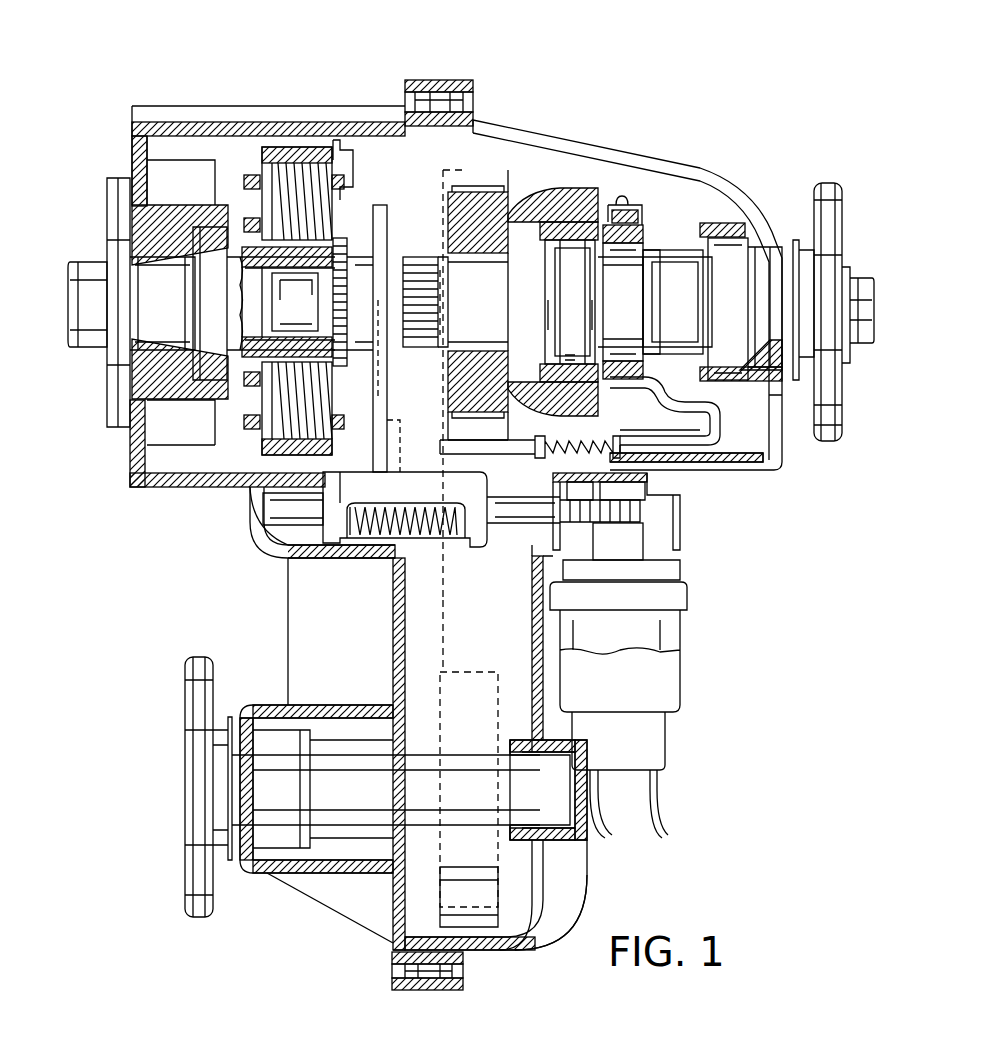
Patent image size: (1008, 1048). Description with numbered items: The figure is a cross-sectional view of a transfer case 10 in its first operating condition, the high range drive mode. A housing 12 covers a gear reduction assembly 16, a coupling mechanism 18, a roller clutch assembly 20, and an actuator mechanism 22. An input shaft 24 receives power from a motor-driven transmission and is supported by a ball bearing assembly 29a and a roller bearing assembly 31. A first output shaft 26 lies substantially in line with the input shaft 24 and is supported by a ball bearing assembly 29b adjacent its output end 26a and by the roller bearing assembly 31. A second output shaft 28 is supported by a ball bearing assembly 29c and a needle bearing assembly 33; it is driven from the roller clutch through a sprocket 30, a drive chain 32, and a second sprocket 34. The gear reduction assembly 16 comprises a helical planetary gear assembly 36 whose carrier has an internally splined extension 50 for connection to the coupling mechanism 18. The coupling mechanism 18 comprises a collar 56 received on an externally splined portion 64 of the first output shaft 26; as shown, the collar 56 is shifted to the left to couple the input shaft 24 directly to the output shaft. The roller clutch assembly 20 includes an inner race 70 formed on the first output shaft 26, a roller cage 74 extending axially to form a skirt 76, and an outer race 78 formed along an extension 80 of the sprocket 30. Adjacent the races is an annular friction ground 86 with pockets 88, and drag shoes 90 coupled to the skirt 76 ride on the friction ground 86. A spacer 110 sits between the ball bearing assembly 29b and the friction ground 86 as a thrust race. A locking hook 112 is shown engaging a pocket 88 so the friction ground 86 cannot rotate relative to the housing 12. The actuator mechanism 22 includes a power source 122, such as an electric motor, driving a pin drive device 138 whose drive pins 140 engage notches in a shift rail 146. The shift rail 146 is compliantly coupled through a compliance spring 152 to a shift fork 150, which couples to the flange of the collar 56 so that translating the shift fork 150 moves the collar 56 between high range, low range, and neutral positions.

The transfer case 10 is at (518, 76).
The housing 12 is at (690, 134).
The gear reduction assembly 16 is at (365, 170).
The coupling mechanism 18 is at (403, 176).
The roller clutch assembly 20 is at (546, 150).
The actuator mechanism 22 is at (708, 522).
The input shaft 24 is at (68, 312).
The first output shaft 26 is at (430, 256).
The output end 26a is at (870, 316).
The second output shaft 28 is at (376, 836).
The ball bearing assembly 29a is at (200, 322).
The ball bearing assembly 29b is at (735, 270).
The ball bearing assembly 29c is at (234, 795).
The sprocket 30 is at (474, 186).
The roller bearing assembly 31 is at (312, 340).
The drive chain 32 is at (440, 628).
The needle bearing assembly 33 is at (567, 909).
The second sprocket 34 is at (447, 981).
The helical planetary gear assembly 36 is at (300, 148).
The internally splined extension 50 is at (405, 200).
The collar 56 is at (388, 274).
The externally splined portion 64 is at (470, 455).
The inner race 70 is at (575, 242).
The roller cage 74 is at (582, 260).
The skirt 76 is at (643, 215).
The outer race 78 is at (565, 330).
The extension 80 is at (573, 188).
The friction ground 86 is at (650, 224).
The pockets 88 is at (636, 248).
The drag shoes 90 is at (614, 196).
The spacer 110 is at (697, 318).
The locking hook 112 is at (757, 466).
The power source 122 is at (660, 634).
The pin drive device 138 is at (635, 546).
The drive pins 140 is at (640, 510).
The shift rail 146 is at (268, 535).
The shift fork 150 is at (385, 430).
The compliance spring 152 is at (388, 540).